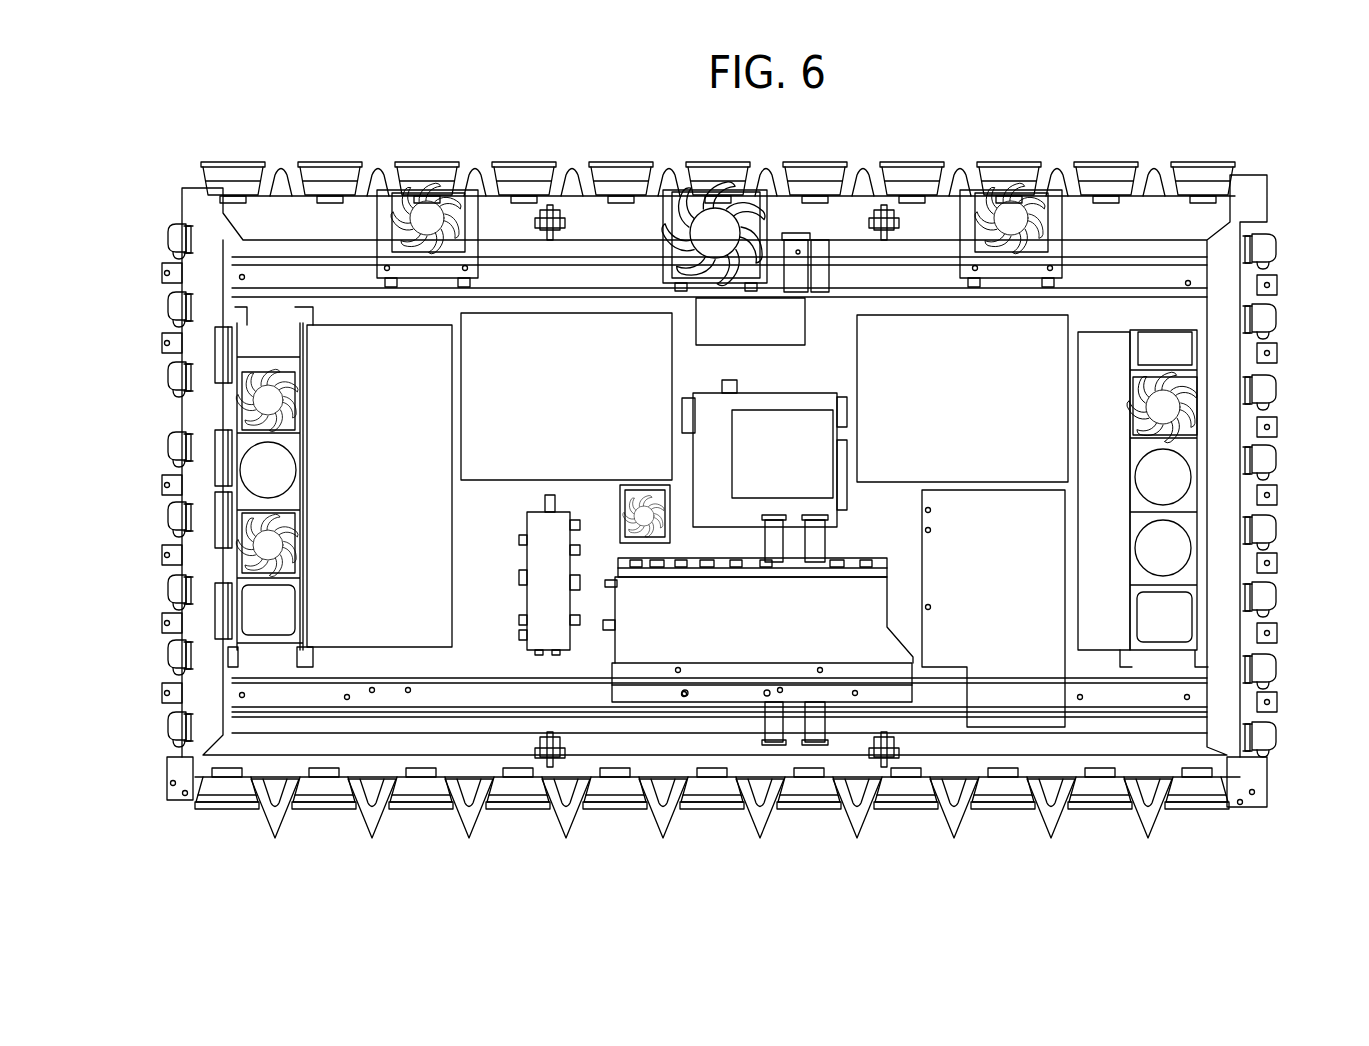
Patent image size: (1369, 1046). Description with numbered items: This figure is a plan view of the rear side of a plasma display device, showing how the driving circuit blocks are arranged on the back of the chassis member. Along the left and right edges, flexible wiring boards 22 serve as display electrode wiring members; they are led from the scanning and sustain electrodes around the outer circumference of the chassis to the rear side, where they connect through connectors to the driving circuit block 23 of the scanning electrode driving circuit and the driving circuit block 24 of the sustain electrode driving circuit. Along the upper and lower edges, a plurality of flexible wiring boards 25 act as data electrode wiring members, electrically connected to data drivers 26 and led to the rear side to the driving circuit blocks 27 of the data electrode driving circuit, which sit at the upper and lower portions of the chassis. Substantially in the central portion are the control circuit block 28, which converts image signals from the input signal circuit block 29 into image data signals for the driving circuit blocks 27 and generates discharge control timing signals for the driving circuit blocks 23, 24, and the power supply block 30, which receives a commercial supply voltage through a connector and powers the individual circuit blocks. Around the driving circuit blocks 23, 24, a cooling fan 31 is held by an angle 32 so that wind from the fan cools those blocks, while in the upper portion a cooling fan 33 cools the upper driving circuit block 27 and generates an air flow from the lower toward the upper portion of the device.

The flexible wiring board 22 is at (168, 240).
The driving circuit block of scanning electrode driving circuit 23 is at (195, 215).
The driving circuit block of sustain electrode driving circuit 24 is at (1247, 427).
The flexible wiring board 25 is at (300, 192).
The data driver 26 is at (228, 187).
The driving circuit block of data electrode driving circuit 27 is at (593, 217).
The control circuit block 28 is at (500, 325).
The input signal circuit block 29 is at (655, 648).
The power supply block 30 is at (1052, 330).
The cooling fan 31 is at (268, 400).
The angle 32 is at (300, 607).
The cooling fan 33 is at (427, 218).